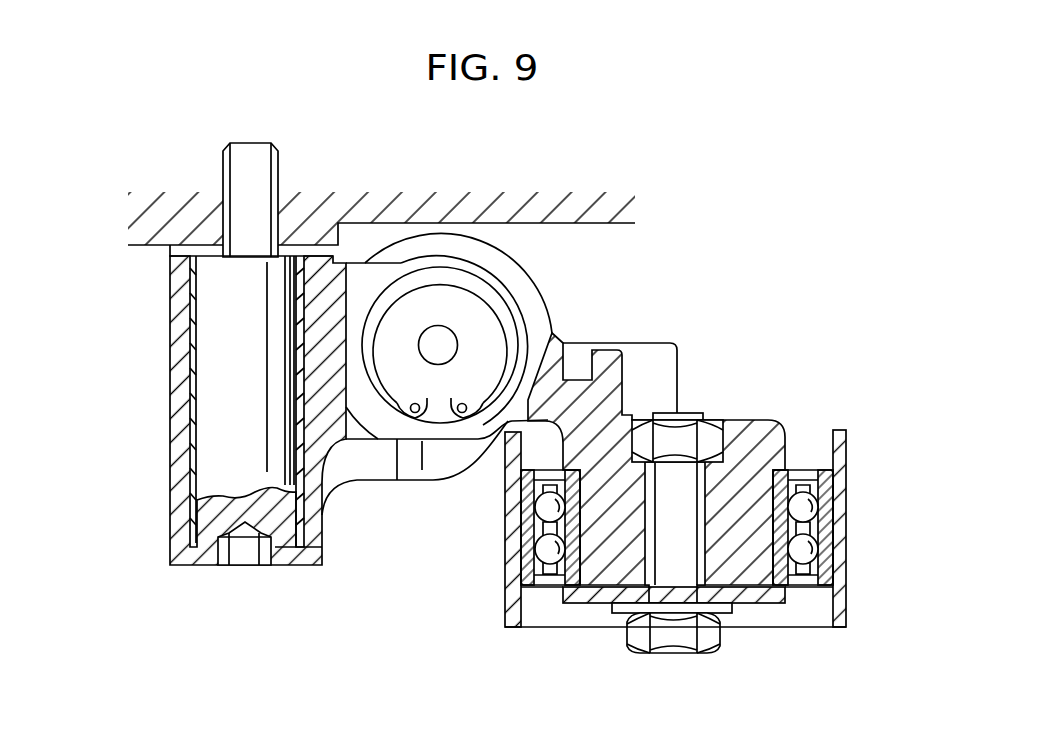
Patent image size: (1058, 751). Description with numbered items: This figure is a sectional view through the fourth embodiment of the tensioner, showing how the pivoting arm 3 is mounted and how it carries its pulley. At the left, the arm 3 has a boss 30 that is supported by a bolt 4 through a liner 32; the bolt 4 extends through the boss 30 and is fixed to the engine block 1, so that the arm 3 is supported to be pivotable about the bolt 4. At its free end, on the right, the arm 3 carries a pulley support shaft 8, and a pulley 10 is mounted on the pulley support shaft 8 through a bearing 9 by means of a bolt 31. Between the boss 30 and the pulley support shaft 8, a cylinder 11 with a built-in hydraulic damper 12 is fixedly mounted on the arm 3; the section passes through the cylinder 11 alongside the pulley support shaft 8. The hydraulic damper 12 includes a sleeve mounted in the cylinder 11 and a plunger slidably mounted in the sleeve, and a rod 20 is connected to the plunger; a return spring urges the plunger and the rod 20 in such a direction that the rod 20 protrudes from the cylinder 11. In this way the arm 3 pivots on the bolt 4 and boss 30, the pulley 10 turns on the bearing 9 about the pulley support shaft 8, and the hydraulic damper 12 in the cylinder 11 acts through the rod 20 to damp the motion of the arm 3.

The engine block 1 is at (178, 220).
The arm 3 is at (359, 288).
The bolt 4 is at (205, 537).
The pulley support shaft 8 is at (752, 570).
The bearing 9 is at (832, 563).
The pulley 10 is at (847, 493).
The cylinder 11 is at (512, 300).
The hydraulic damper 12 is at (421, 364).
The rod 20 is at (438, 356).
The boss 30 is at (180, 352).
The bolt 31 is at (682, 432).
The liner 32 is at (190, 440).